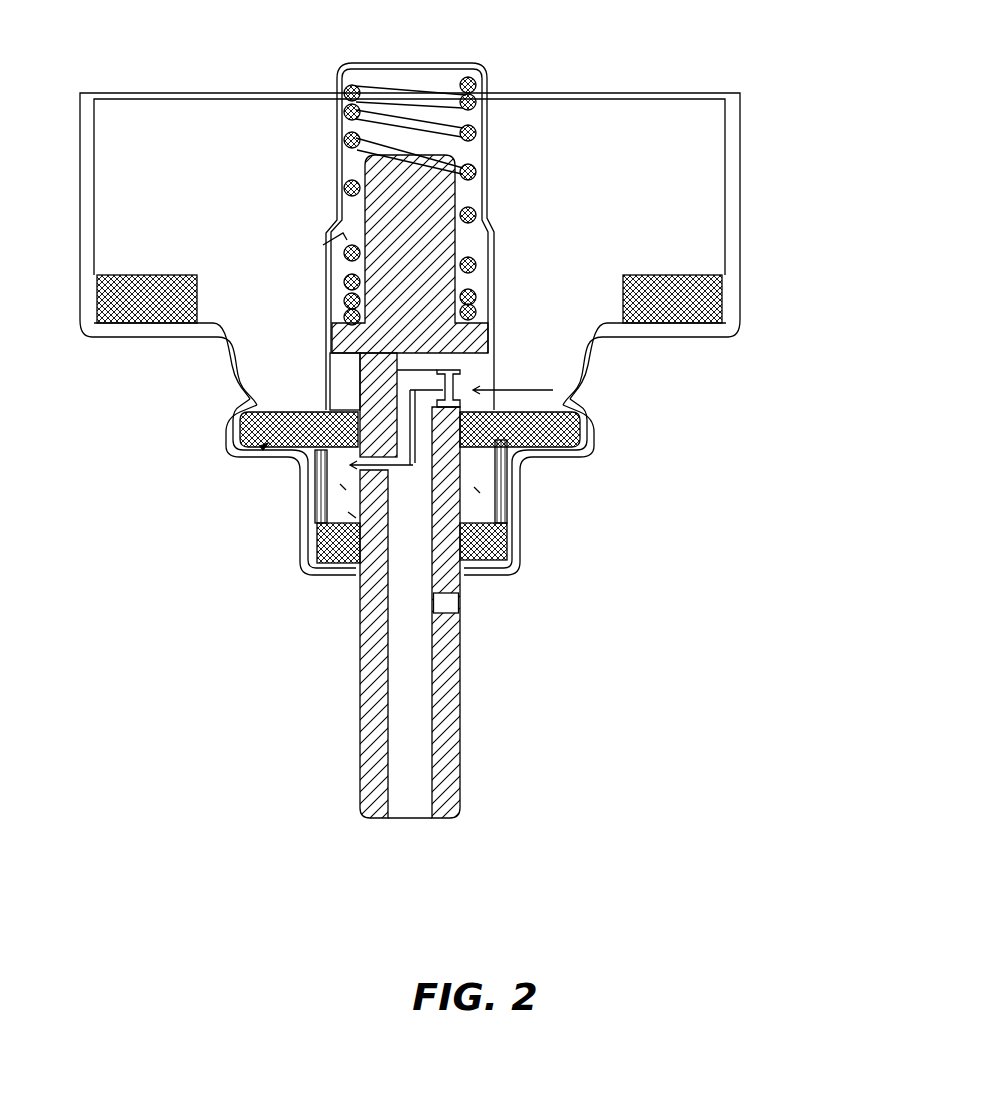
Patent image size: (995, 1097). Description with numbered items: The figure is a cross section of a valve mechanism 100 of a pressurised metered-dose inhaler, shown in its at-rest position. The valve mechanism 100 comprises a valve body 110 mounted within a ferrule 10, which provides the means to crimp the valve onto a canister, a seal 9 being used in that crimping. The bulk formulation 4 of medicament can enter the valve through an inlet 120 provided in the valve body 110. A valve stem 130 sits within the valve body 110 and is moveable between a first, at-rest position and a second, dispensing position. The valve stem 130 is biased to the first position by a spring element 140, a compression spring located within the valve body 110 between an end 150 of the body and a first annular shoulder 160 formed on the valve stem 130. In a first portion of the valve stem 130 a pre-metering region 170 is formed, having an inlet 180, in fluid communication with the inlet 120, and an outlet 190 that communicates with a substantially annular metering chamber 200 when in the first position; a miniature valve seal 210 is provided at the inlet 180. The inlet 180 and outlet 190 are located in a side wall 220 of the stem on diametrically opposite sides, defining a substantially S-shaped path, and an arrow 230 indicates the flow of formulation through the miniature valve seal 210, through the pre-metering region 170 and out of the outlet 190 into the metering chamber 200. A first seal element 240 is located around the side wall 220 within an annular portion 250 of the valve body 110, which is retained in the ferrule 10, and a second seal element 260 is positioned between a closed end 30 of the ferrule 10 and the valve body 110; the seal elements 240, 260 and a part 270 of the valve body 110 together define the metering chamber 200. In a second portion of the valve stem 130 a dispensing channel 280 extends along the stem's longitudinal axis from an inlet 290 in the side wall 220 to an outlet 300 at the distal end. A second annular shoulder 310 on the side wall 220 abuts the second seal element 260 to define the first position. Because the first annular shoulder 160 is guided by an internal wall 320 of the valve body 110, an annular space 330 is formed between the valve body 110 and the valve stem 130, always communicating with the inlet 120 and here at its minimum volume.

The bulk formulation 4 is at (591, 310).
The seal 9 is at (132, 288).
The ferrule 10 is at (740, 240).
The closed end 30 is at (352, 577).
The valve mechanism 100 is at (550, 137).
The valve body 110 is at (337, 122).
The inlet 120 is at (525, 383).
The valve stem 130 is at (393, 312).
The spring element 140 is at (471, 97).
The end 150 is at (372, 62).
The first annular shoulder 160 is at (500, 360).
The pre-metering region 170 is at (413, 465).
The inlet 180 is at (447, 407).
The outlet 190 is at (230, 448).
The metering chamber 200 is at (477, 490).
The miniature valve seal 210 is at (483, 541).
The side wall 220 is at (330, 483).
The arrow 230 is at (718, 338).
The first seal element 240 is at (264, 447).
The annular portion 250 is at (238, 431).
The second seal element 260 is at (352, 515).
The part 270 is at (355, 490).
The dispensing channel 280 is at (420, 783).
The inlet 290 is at (453, 605).
The outlet 300 is at (415, 817).
The second annular shoulder 310 is at (343, 487).
The internal wall 320 is at (343, 240).
The annular space 330 is at (340, 377).